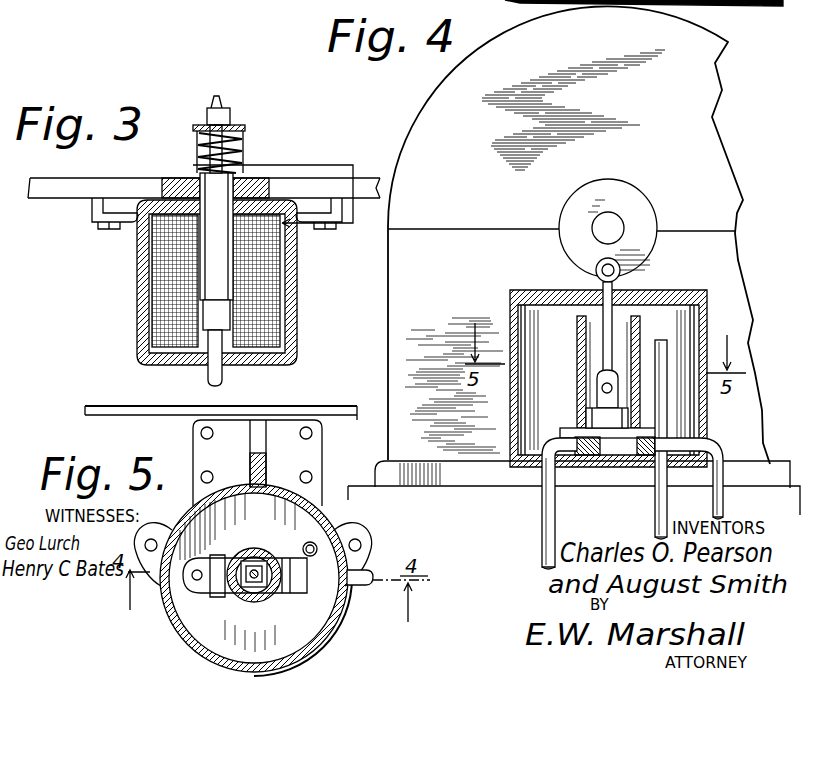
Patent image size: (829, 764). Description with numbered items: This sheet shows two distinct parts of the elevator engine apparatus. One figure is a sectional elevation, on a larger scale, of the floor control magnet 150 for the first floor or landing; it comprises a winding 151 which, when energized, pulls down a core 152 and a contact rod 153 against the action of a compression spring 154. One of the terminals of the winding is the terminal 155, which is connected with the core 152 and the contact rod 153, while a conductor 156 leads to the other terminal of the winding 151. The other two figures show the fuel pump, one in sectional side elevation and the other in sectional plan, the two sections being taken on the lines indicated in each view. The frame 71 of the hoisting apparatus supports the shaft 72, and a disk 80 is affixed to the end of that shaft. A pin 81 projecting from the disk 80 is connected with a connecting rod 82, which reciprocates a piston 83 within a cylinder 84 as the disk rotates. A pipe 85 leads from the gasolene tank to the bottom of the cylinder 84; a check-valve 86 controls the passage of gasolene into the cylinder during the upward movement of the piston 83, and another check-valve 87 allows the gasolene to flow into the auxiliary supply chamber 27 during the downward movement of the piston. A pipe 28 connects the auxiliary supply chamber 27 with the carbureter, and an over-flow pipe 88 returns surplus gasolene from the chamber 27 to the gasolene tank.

In FIG. 3, the floor control magnet 150 is at (168, 188).
In FIG. 3, the winding 151 is at (152, 296).
In FIG. 3, the core 152 is at (212, 195).
In FIG. 3, the contact rod 153 is at (223, 378).
In FIG. 3, the compression spring 154 is at (242, 148).
In FIG. 3, the terminal 155 is at (353, 223).
In FIG. 3, the conductor 156 is at (282, 348).
In FIG. 4, the frame 71 is at (720, 226).
In FIG. 4, the shaft 72 is at (614, 230).
In FIG. 4, the disk 80 is at (596, 190).
In FIG. 4, the pin 81 is at (595, 272).
In FIG. 4, the connecting rod 82 is at (612, 318).
In FIG. 5, the connecting rod 82 is at (262, 592).
In FIG. 4, the piston 83 is at (597, 412).
In FIG. 5, the piston 83 is at (252, 590).
In FIG. 4, the cylinder 84 is at (622, 348).
In FIG. 5, the cylinder 84 is at (258, 556).
In FIG. 4, the pipe 85 is at (542, 510).
In FIG. 5, the pipe 85 is at (197, 588).
In FIG. 4, the check-valve 86 is at (583, 456).
In FIG. 4, the check-valve 87 is at (660, 466).
In FIG. 4, the over-flow pipe 88 is at (655, 522).
In FIG. 5, the over-flow pipe 88 is at (310, 545).
In FIG. 4, the auxiliary supply chamber 27 is at (690, 352).
In FIG. 5, the auxiliary supply chamber 27 is at (308, 628).
In FIG. 4, the pipe 28 is at (723, 455).
In FIG. 5, the pipe 28 is at (368, 586).